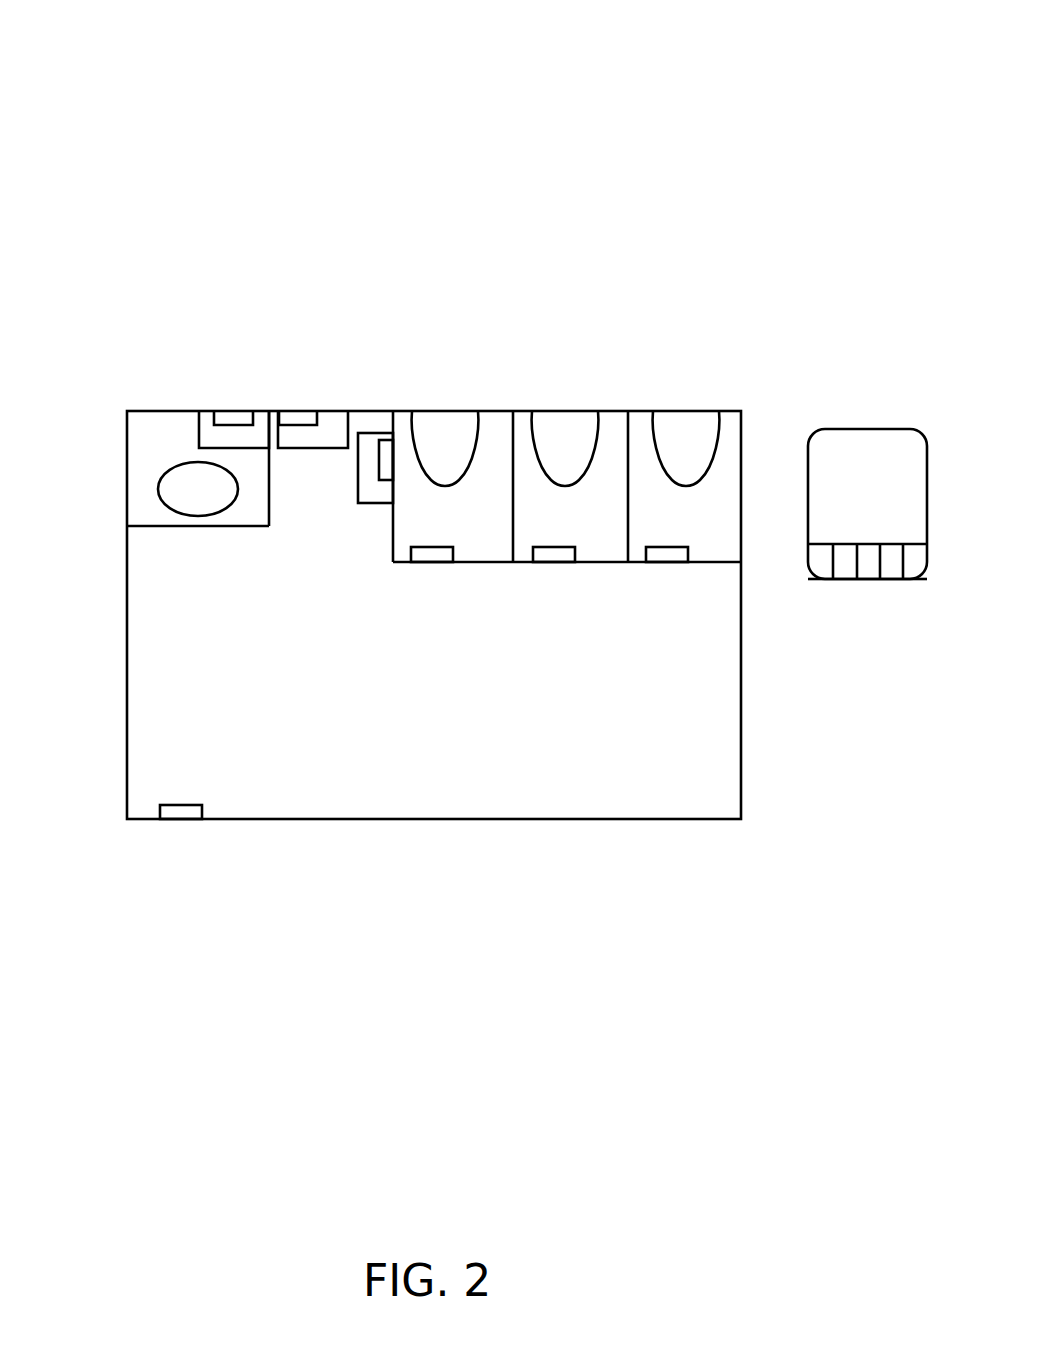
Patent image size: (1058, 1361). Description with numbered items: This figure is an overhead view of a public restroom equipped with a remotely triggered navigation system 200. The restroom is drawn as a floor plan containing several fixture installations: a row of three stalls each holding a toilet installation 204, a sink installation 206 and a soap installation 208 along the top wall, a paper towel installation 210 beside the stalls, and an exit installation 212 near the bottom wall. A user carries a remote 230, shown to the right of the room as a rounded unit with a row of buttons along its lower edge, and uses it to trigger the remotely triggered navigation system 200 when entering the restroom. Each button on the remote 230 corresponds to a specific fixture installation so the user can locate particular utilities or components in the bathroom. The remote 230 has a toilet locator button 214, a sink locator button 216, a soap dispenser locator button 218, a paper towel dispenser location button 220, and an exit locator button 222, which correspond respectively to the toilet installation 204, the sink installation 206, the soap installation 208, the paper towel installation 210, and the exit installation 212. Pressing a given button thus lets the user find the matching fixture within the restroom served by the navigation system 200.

The remotely triggered navigation system 200 is at (119, 64).
The toilet installation 204 is at (440, 547).
The sink installation 206 is at (237, 411).
The soap installation 208 is at (307, 411).
The paper towel installation 210 is at (388, 440).
The exit installation 212 is at (185, 805).
The toilet locator button 214 is at (812, 588).
The sink locator button 216 is at (839, 594).
The soap dispenser locator button 218 is at (866, 594).
The paper towel dispenser location button 220 is at (890, 594).
The exit locator button 222 is at (918, 594).
The remote 230 is at (812, 420).